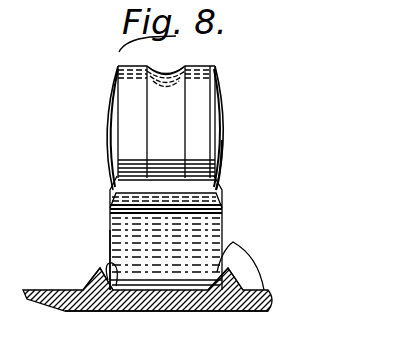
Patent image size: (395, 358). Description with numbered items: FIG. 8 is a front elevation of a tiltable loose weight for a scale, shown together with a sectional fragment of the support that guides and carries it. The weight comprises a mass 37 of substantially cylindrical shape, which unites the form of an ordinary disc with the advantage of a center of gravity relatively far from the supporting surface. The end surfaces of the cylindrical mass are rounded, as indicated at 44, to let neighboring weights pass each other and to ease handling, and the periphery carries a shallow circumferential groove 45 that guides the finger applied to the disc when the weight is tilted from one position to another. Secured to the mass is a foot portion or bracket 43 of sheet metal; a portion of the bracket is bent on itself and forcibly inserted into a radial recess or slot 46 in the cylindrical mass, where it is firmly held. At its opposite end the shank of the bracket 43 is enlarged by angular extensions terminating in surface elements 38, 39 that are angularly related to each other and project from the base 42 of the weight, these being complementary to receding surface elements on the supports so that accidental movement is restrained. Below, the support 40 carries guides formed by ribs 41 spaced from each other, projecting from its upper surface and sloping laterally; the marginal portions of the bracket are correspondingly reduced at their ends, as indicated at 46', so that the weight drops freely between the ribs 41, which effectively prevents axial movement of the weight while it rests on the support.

The cylindrical mass 37 is at (122, 112).
The surface element 38 is at (148, 310).
The surface element 39 is at (110, 213).
The support 40 is at (43, 273).
The rib 41 is at (84, 311).
The base 42 is at (223, 220).
The bracket 43 is at (108, 235).
The rounded end surface 44 is at (110, 160).
The circumferential groove 45 is at (167, 74).
The radial recess or slot 46 is at (245, 165).
The reduced marginal portion 46' is at (170, 261).